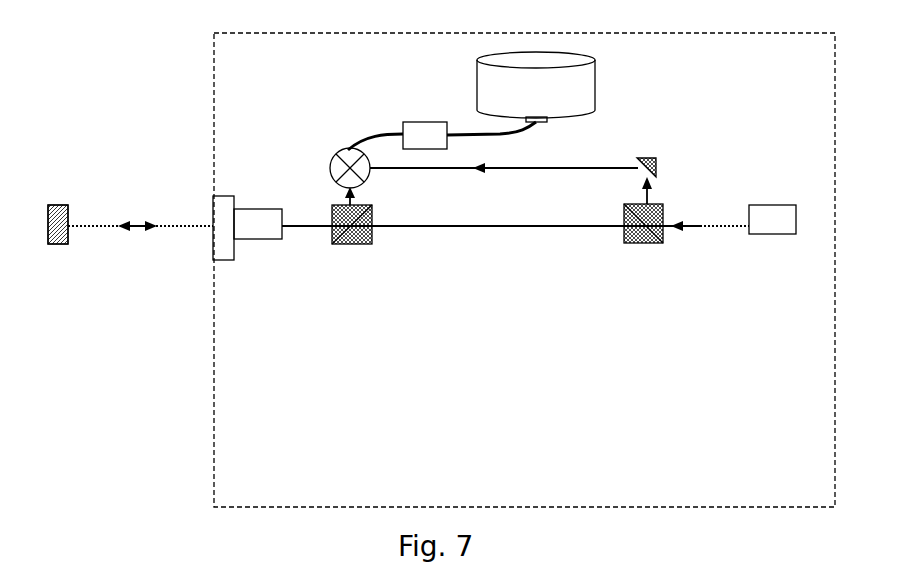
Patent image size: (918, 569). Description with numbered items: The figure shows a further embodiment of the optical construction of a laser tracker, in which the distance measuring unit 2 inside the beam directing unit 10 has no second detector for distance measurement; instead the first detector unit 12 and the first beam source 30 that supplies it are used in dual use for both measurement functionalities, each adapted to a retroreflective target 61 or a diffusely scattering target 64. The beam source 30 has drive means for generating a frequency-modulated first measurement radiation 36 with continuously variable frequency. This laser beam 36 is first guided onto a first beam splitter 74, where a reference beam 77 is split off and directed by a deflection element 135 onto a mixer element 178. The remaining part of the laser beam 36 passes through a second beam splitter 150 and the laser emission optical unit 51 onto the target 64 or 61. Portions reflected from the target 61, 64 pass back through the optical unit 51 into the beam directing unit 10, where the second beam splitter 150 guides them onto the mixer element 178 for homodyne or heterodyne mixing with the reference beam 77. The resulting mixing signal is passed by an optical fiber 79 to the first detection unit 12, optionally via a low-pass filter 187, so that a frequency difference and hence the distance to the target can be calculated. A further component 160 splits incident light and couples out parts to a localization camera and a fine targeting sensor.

The distance measuring unit 2 is at (676, 74).
The beam directing unit 10 is at (256, 68).
The first detector unit 12 is at (497, 76).
The first beam source 30 is at (763, 221).
The first measurement radiation 36 is at (733, 226).
The laser emission optical unit 51 is at (220, 235).
The cooperative target 61 is at (58, 224).
The natural target 64 is at (62, 244).
The first beam splitter 74 is at (640, 240).
The reference beam 77 is at (642, 185).
The optical fiber 79 is at (490, 131).
The deflection element 135 is at (657, 158).
The second beam splitter 150 is at (372, 236).
The component 160 is at (247, 222).
The mixer element 178 is at (357, 180).
The low-pass filter 187 is at (423, 138).